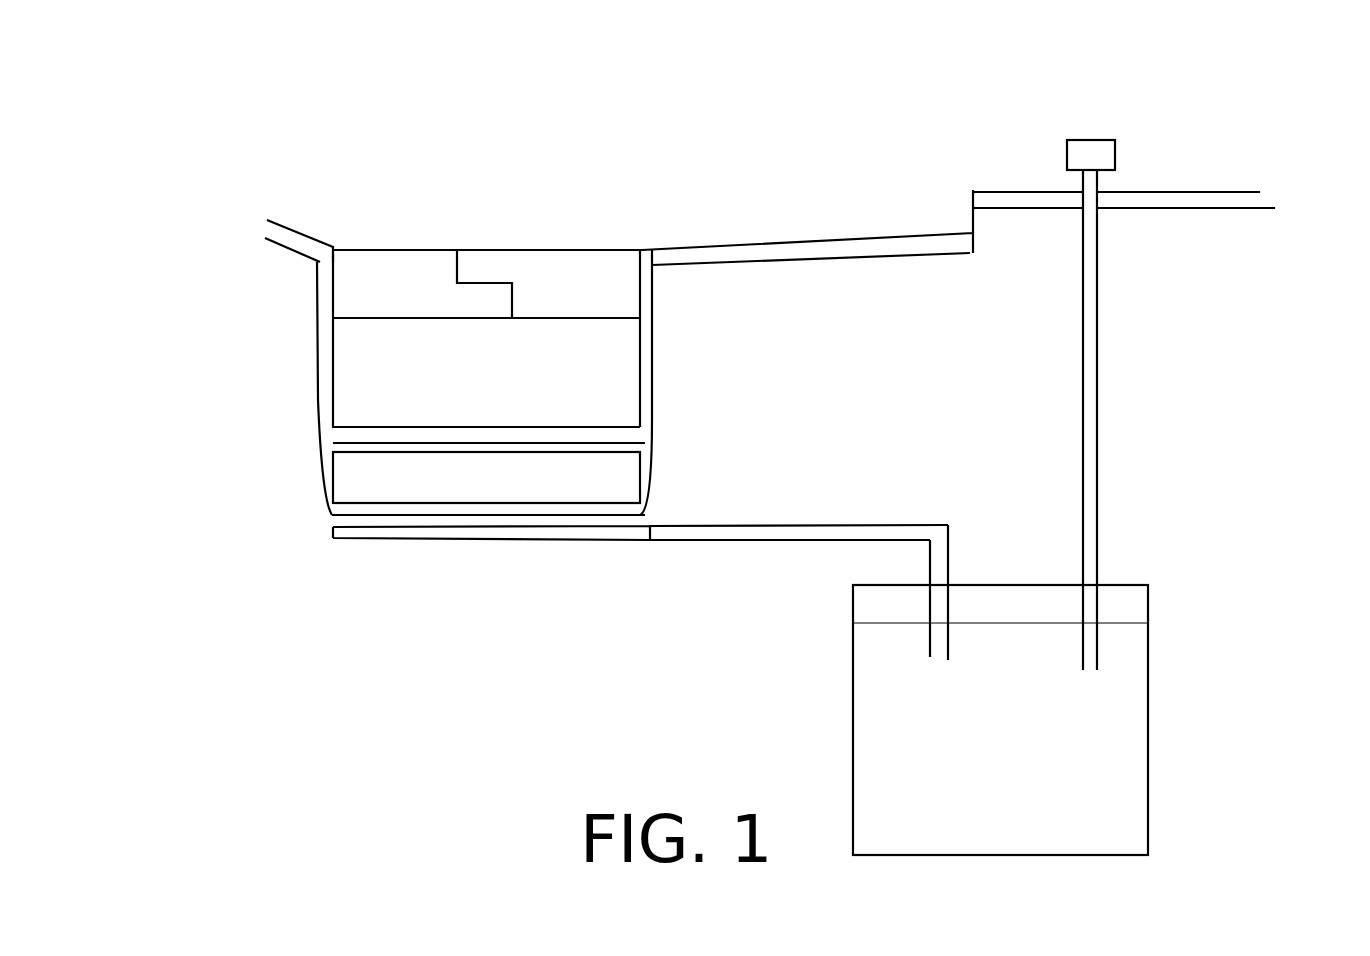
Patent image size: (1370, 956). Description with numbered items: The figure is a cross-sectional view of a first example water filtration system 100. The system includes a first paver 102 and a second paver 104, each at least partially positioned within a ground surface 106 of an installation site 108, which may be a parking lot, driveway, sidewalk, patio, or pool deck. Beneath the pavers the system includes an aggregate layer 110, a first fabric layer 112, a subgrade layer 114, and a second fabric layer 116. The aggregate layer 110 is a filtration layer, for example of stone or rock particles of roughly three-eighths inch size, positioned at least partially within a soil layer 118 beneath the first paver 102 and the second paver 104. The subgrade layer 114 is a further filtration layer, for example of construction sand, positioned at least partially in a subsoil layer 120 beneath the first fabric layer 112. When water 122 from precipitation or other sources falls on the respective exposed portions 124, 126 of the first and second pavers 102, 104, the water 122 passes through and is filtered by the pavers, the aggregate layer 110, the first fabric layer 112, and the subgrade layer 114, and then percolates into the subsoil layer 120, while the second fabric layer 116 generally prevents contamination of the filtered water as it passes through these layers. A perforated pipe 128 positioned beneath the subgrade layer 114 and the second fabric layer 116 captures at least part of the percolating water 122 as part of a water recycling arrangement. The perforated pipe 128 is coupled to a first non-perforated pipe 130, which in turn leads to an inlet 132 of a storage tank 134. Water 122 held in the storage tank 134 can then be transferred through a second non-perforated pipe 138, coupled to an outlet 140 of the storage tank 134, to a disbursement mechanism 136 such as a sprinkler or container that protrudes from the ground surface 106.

The water filtration system 100 is at (438, 767).
The first paver 102 is at (437, 293).
The second paver 104 is at (580, 295).
The ground surface 106 is at (293, 230).
The installation site 108 is at (403, 71).
The aggregate layer 110 is at (490, 370).
The first fabric layer 112 is at (345, 440).
The subgrade layer 114 is at (495, 491).
The second fabric layer 116 is at (317, 355).
The soil layer 118 is at (213, 378).
The subsoil layer 120 is at (225, 501).
The water 122 is at (266, 200).
The exposed portion of first paver 124 is at (383, 248).
The exposed portion of second paver 126 is at (523, 248).
The perforated pipe 128 is at (410, 541).
The first non-perforated pipe 130 is at (765, 541).
The inlet 132 is at (948, 583).
The storage tank 134 is at (853, 662).
The disbursement mechanism 136 is at (1117, 148).
The second non-perforated pipe 138 is at (1098, 362).
The outlet 140 is at (1098, 583).